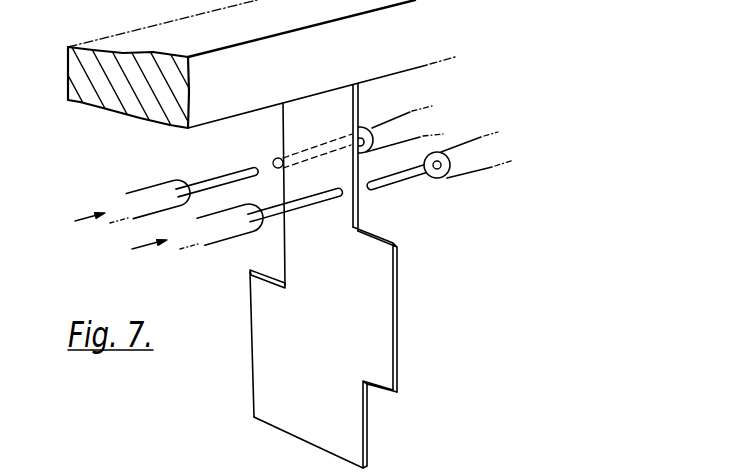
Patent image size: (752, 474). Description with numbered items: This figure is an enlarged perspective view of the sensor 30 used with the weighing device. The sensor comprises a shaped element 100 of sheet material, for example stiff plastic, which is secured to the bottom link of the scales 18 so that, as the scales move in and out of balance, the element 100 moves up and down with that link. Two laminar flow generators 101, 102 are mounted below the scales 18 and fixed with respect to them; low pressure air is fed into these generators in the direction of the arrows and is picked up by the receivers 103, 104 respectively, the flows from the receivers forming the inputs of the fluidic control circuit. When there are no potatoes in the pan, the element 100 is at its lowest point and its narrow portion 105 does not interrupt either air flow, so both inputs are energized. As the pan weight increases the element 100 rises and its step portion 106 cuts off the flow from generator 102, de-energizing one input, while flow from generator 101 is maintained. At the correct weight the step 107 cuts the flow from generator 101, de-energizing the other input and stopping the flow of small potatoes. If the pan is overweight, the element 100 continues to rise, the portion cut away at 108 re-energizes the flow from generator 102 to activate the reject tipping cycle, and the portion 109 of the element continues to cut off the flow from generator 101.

The scales 18 is at (291, 73).
The sensor 30 is at (323, 276).
The shaped element 100 is at (290, 428).
The laminar flow generator 101 is at (153, 188).
The laminar flow generator 102 is at (213, 236).
The receiver 103 is at (380, 128).
The receiver 104 is at (478, 162).
The narrow portion 105 is at (298, 137).
The step portion 106 is at (382, 280).
The step 107 is at (260, 283).
The cut-away portion 108 is at (357, 430).
The portion 109 is at (268, 338).